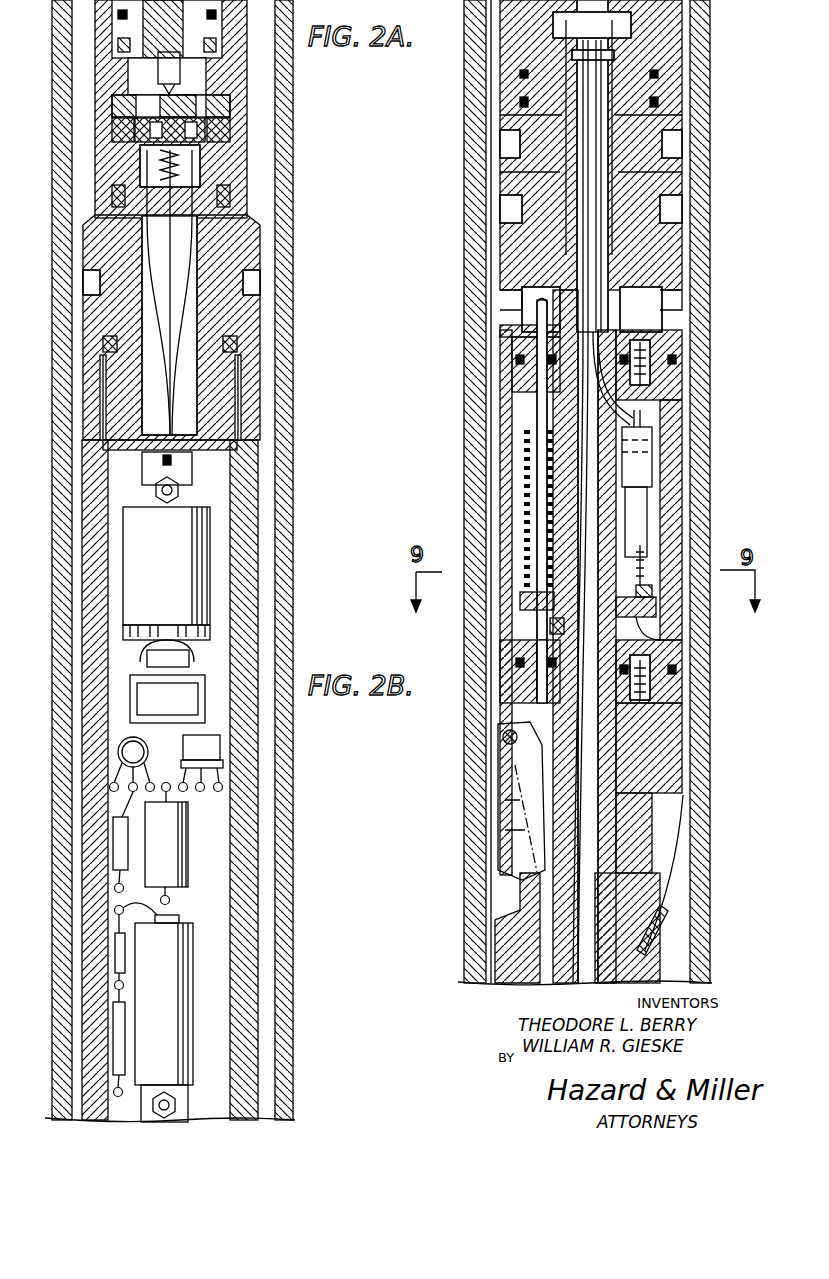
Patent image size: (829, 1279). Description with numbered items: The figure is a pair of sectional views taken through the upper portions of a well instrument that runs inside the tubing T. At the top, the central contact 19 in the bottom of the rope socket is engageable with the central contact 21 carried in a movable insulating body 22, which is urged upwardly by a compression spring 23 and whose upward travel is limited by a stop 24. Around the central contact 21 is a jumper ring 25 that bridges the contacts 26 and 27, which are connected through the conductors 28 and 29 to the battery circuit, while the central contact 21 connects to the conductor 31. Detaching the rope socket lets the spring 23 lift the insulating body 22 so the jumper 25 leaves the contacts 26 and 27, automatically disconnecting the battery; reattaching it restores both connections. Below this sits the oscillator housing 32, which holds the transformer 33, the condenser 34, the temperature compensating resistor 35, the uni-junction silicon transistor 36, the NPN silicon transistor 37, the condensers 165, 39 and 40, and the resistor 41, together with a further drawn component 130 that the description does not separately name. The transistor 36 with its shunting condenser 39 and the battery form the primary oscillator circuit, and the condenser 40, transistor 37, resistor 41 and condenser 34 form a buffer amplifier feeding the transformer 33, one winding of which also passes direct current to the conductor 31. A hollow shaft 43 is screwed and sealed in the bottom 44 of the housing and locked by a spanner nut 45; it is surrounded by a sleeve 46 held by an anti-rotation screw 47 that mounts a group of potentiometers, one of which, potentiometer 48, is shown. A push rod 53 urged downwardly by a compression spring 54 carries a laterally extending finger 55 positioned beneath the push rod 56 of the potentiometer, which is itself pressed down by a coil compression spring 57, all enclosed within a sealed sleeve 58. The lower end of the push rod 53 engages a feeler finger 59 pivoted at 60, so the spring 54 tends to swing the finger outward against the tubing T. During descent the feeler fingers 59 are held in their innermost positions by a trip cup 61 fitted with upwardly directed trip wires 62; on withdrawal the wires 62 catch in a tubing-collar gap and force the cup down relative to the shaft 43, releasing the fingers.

In FIG. 2A, the tubing T is at (283, 352).
In FIG. 2B, the tubing T is at (470, 258).
In FIG. 2A, the central contact 19 is at (165, 68).
In FIG. 2A, the central contact 21 is at (205, 103).
In FIG. 2A, the movable insulating body 22 is at (205, 128).
In FIG. 2A, the compression spring 23 is at (190, 173).
In FIG. 2A, the stop 24 is at (150, 110).
In FIG. 2A, the jumper ring 25 is at (135, 148).
In FIG. 2A, the contact 26 is at (150, 166).
In FIG. 2A, the contact 27 is at (205, 151).
In FIG. 2A, the conductor 28 is at (150, 253).
In FIG. 2A, the conductor 29 is at (185, 316).
In FIG. 2A, the conductor 31 is at (178, 244).
In FIG. 2A, the oscillator housing 32 is at (240, 513).
In FIG. 2A, the transformer 33 is at (128, 530).
In FIG. 2A, the condenser 34 is at (150, 660).
In FIG. 2A, the temperature compensating resistor 35 is at (135, 682).
In FIG. 2A, the uni-junction silicon transistor 36 is at (128, 756).
In FIG. 2A, the NPN silicon transistor 37 is at (200, 740).
In FIG. 2A, the condenser 39 is at (118, 843).
In FIG. 2A, the condenser 40 is at (118, 1037).
In FIG. 2A, the resistor 41 is at (120, 957).
In FIG. 2B, the hollow shaft 43 is at (610, 285).
In FIG. 2B, the bottom of oscillator housing 44 is at (630, 117).
In FIG. 2B, the spanner nut 45 is at (640, 212).
In FIG. 2B, the sleeve 46 is at (640, 500).
In FIG. 2B, the anti-rotation screw 47 is at (553, 627).
In FIG. 2B, the potentiometer 48 is at (645, 455).
In FIG. 2B, the push rod 53 is at (537, 476).
In FIG. 2B, the compression spring 54 is at (527, 514).
In FIG. 2B, the laterally extending finger 55 is at (520, 600).
In FIG. 2B, the potentiometer push rod 56 is at (650, 557).
In FIG. 2B, the coil compression spring 57 is at (650, 578).
In FIG. 2B, the sealed sleeve 58 is at (505, 422).
In FIG. 2B, the feeler finger 59 is at (512, 873).
In FIG. 2B, the pivot 60 is at (508, 737).
In FIG. 2B, the trip cup 61 is at (500, 950).
In FIG. 2B, the trip wire 62 is at (690, 880).
In FIG. 2A, the battery 130 is at (170, 976).
In FIG. 2A, the condenser 165 is at (180, 833).